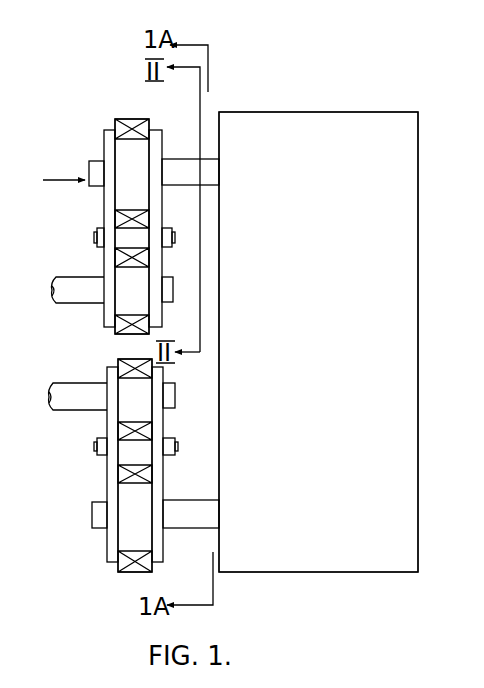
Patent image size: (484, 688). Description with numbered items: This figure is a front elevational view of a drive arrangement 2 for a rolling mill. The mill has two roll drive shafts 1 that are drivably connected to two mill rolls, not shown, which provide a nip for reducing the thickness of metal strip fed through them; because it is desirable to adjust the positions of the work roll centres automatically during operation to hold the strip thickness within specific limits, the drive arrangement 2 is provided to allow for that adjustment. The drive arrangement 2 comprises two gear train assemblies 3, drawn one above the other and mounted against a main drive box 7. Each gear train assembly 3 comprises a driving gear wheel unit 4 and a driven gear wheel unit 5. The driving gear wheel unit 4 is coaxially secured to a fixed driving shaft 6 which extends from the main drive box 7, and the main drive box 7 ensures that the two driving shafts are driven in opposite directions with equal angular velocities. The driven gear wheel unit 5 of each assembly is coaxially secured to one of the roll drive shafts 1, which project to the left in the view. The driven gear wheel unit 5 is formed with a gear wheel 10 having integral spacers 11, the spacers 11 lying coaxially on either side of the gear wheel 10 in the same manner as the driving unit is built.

The roll drive shaft 1 is at (63, 272).
The drive arrangement 2 is at (401, 110).
The gear train assembly 3 is at (88, 467).
The driving gear wheel unit 4 is at (104, 143).
The driven gear wheel unit 5 is at (107, 375).
The fixed driving shaft 6 is at (185, 168).
The main drive box 7 is at (329, 318).
The gear wheel 10 is at (138, 292).
The spacer 11 is at (105, 308).